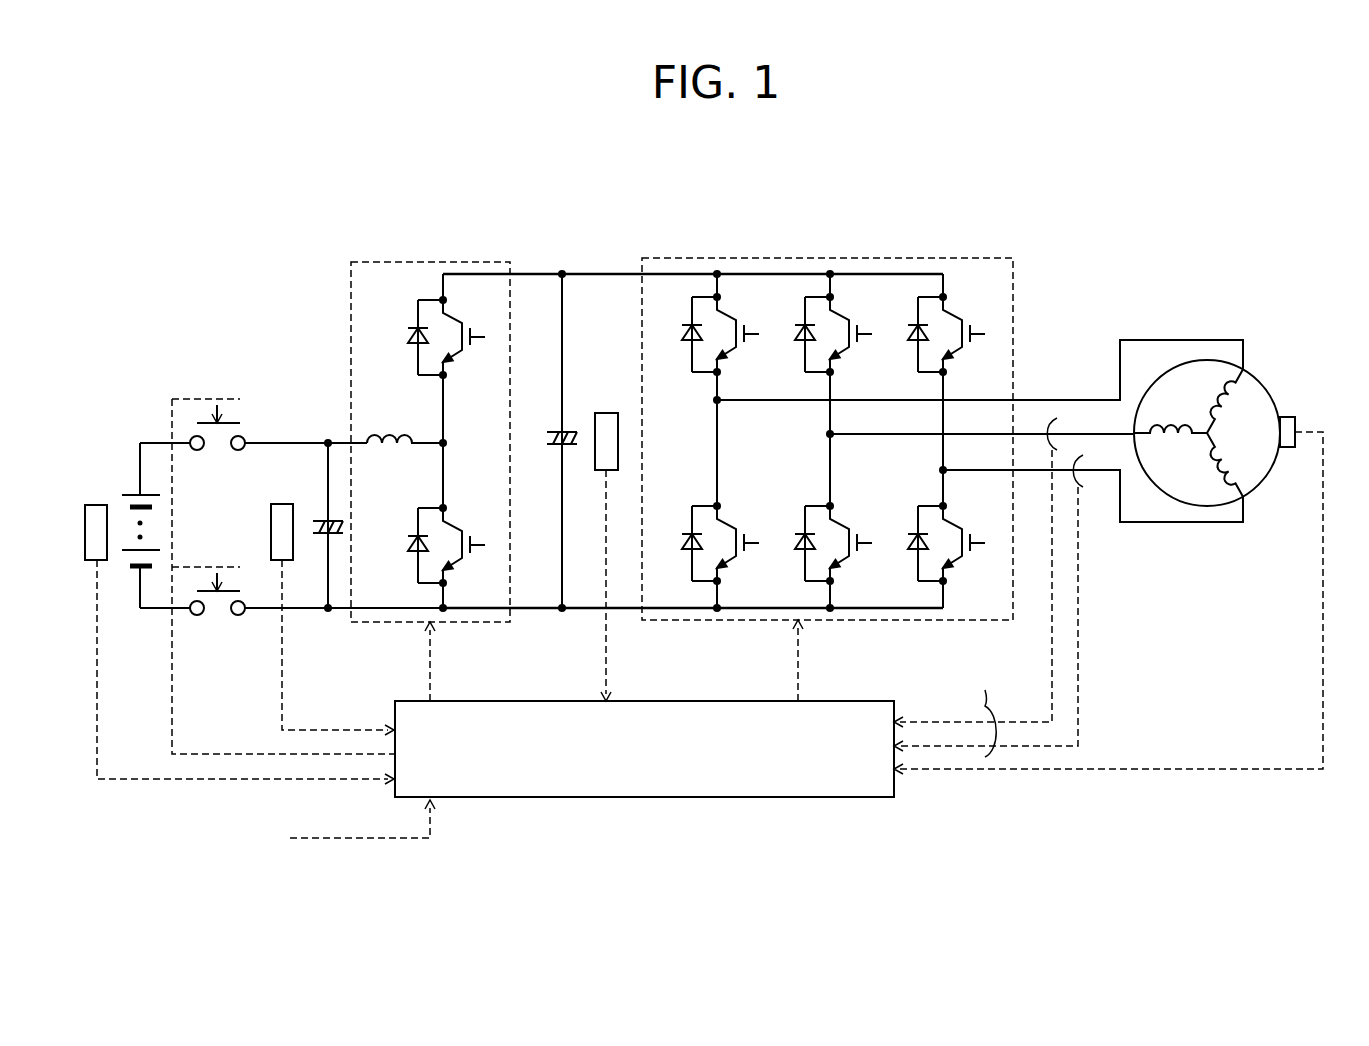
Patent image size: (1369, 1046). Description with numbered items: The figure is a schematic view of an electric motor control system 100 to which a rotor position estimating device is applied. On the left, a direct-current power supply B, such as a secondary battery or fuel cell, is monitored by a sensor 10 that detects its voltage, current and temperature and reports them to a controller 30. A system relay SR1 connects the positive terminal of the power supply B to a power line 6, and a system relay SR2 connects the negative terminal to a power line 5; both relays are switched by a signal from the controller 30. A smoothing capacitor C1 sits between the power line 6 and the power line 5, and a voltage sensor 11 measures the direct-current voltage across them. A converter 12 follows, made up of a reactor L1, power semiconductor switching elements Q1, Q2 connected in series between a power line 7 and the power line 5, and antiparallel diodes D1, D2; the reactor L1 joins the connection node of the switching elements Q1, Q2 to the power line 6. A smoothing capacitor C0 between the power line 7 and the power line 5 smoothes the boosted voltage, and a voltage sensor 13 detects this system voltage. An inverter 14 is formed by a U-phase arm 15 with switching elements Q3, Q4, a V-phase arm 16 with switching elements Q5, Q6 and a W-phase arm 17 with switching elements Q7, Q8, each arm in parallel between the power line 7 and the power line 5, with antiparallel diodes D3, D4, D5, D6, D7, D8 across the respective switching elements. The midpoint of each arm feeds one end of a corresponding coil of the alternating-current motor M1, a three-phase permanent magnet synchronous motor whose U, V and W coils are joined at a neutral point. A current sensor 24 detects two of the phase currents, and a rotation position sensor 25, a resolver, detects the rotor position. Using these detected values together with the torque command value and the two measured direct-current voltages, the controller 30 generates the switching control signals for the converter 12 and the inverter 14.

The electric motor control system 100 is at (618, 169).
The direct-current power supply B is at (132, 493).
The sensor 10 is at (85, 531).
The voltage sensor 11 is at (283, 503).
The system relay SR1 is at (230, 421).
The system relay SR2 is at (226, 590).
The smoothing capacitor C1 is at (323, 520).
The power line 6 is at (270, 441).
The converter 12 is at (433, 262).
The reactor L1 is at (388, 440).
The power semiconductor switching element Q1 is at (469, 336).
The power semiconductor switching element Q2 is at (470, 544).
The antiparallel diode D1 is at (409, 338).
The antiparallel diode D2 is at (409, 547).
The power line 7 is at (597, 272).
The power line 5 is at (539, 610).
The smoothing capacitor C0 is at (556, 432).
The voltage sensor 13 is at (605, 412).
The inverter 14 is at (830, 258).
The switching element Q3 is at (741, 332).
The switching element Q4 is at (741, 542).
The switching element Q5 is at (854, 332).
The switching element Q6 is at (854, 542).
The switching element Q7 is at (967, 332).
The switching element Q8 is at (967, 542).
The antiparallel diode D3 is at (686, 335).
The antiparallel diode D4 is at (686, 546).
The antiparallel diode D5 is at (798, 335).
The antiparallel diode D6 is at (798, 546).
The antiparallel diode D7 is at (911, 335).
The antiparallel diode D8 is at (911, 546).
The U-phase arm 15 is at (677, 413).
The V-phase arm 16 is at (790, 448).
The W-phase arm 17 is at (904, 483).
The alternating-current motor M1 is at (1267, 383).
The current sensor 24 is at (1050, 418).
The rotation position sensor 25 is at (1295, 418).
The controller 30 is at (855, 797).